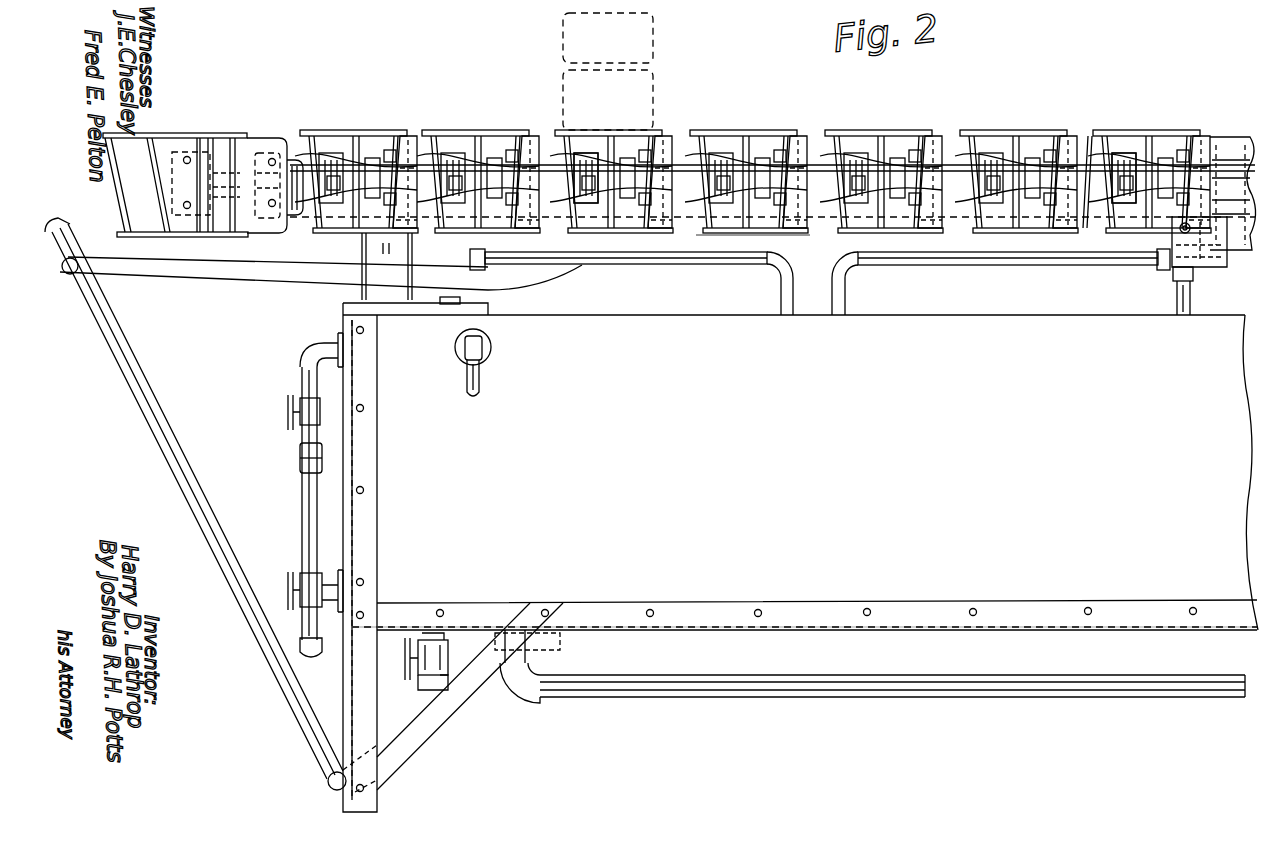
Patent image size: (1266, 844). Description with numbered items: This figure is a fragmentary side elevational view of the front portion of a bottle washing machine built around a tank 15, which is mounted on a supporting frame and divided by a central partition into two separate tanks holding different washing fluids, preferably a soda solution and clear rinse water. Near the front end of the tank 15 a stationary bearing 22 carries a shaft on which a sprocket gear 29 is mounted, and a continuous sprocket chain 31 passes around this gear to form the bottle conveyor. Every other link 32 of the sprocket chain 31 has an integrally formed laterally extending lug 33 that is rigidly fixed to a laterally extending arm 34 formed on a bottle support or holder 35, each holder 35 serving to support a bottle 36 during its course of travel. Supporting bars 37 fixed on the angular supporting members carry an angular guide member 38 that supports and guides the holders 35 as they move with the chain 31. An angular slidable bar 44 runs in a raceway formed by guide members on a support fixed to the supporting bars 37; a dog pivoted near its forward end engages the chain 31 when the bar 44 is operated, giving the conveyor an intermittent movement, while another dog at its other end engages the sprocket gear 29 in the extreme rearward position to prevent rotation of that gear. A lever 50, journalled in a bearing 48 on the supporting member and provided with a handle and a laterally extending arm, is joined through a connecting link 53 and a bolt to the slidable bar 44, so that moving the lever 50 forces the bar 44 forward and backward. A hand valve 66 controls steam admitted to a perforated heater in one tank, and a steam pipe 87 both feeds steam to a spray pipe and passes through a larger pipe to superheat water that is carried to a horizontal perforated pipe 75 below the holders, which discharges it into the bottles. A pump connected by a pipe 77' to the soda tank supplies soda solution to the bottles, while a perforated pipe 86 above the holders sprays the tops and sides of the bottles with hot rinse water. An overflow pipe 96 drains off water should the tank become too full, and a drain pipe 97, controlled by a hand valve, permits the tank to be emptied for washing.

The tank 15 is at (713, 335).
The stationary bearing 22 is at (360, 247).
The sprocket gear 29 is at (498, 205).
The sprocket chain 31 is at (1128, 150).
The link 32 is at (1083, 150).
The laterally extending lug 33 is at (293, 152).
The laterally extending arm 34 is at (274, 150).
The bottle support or holder 35 is at (181, 133).
The bottle 36 is at (562, 44).
The supporting bar 37 is at (1195, 278).
The angular guide member 38 is at (1182, 236).
The slidable bar 44 is at (820, 222).
The bearing 48 is at (332, 790).
The lever 50 is at (120, 352).
The connecting link 53 is at (256, 273).
The hand valve 66 is at (296, 588).
The perforated pipe 75 is at (674, 268).
The pipe 77' is at (870, 666).
The perforated pipe 86 is at (293, 406).
The steam pipe 87 is at (305, 508).
The overflow pipe 96 is at (484, 384).
The drain pipe 97 is at (450, 660).